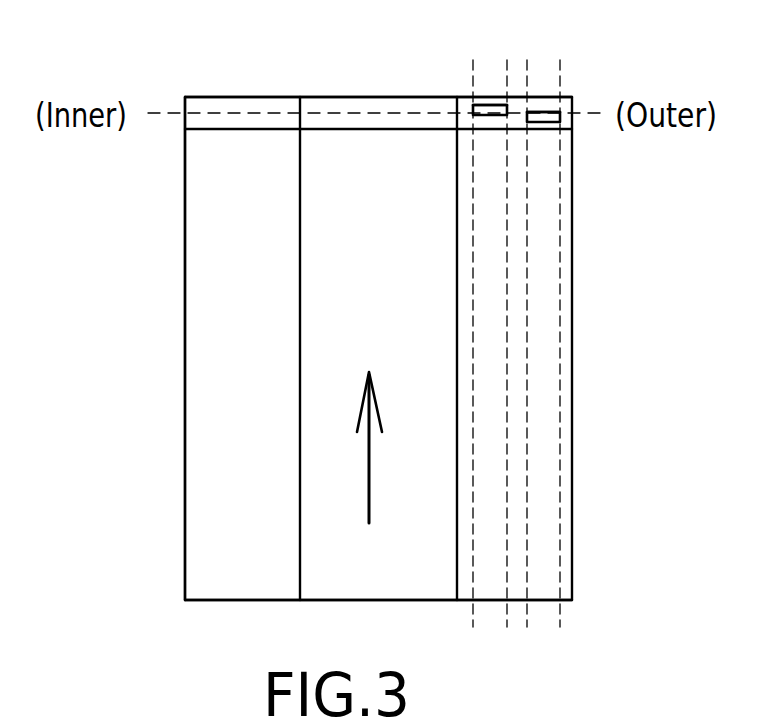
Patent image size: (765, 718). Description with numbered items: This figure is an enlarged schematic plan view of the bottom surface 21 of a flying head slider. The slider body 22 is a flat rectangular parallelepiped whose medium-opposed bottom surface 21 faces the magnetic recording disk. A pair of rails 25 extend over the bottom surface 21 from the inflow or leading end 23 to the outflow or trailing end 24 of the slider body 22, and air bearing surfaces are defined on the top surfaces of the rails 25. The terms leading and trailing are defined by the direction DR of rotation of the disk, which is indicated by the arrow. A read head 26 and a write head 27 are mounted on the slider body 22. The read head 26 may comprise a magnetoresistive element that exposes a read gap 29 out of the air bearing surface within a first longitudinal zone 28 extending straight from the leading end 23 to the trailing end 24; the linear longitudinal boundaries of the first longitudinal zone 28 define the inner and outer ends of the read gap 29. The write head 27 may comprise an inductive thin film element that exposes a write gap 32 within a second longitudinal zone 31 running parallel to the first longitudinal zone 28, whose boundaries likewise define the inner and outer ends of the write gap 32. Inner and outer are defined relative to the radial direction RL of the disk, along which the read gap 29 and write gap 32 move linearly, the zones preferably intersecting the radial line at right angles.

The bottom surface 21 is at (220, 384).
The slider body 22 is at (185, 292).
The leading end 23 is at (208, 600).
The trailing end 24 is at (208, 97).
The rails 25 is at (300, 209).
The read head 26 is at (550, 95).
The write head 27 is at (495, 91).
The first longitudinal zone 28 is at (560, 631).
The read gap 29 is at (554, 112).
The second longitudinal zone 31 is at (507, 631).
The write gap 32 is at (483, 110).
The radial direction RL is at (327, 112).
The direction of rotation DR is at (370, 475).